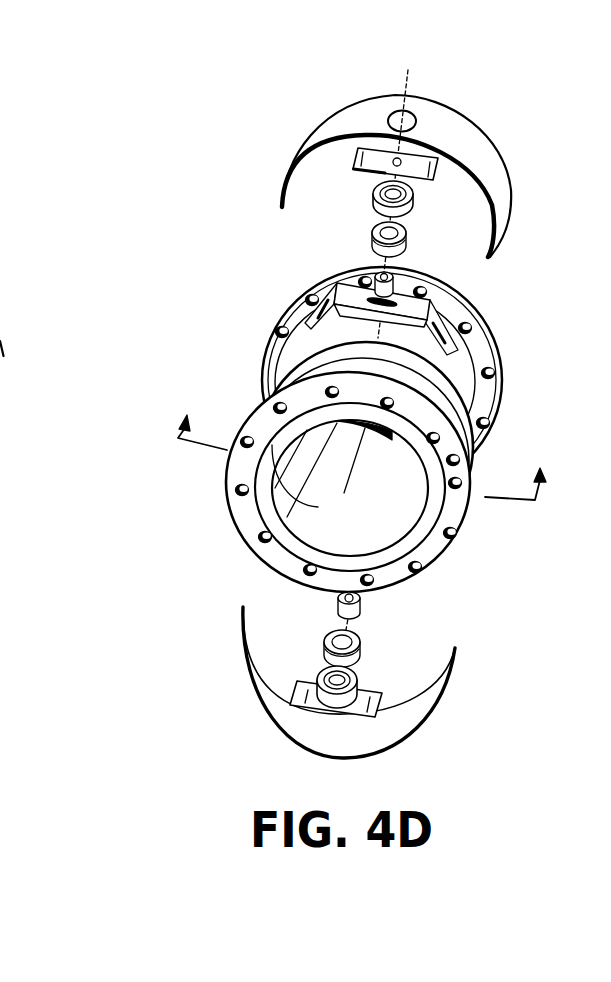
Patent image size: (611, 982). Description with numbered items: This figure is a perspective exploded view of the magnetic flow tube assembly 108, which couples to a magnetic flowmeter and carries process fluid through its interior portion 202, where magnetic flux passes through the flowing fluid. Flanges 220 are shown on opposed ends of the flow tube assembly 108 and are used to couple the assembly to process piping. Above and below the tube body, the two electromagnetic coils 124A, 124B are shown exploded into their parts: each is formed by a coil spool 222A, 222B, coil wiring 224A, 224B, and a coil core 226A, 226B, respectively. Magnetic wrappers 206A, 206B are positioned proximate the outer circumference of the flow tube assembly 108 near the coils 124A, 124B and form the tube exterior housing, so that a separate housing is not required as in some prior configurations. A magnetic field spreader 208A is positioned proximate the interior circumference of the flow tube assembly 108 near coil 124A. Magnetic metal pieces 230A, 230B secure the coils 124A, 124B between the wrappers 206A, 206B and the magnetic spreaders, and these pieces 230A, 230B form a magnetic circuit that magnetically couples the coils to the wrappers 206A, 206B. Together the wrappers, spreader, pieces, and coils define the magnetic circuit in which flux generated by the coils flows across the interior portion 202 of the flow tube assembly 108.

The magnetic flow tube assembly 108 is at (180, 266).
The electromagnetic coil 124A is at (324, 213).
The electromagnetic coil 124B is at (272, 662).
The interior portion 202 is at (316, 507).
The magnetic wrapper 206A is at (458, 155).
The magnetic wrapper 206B is at (387, 738).
The magnetic field spreader 208A is at (437, 318).
The flange 220 is at (502, 368).
The coil spool 222A is at (407, 233).
The coil spool 222B is at (360, 643).
The coil wiring 224A is at (414, 197).
The coil wiring 224B is at (357, 681).
The coil core 226A is at (393, 283).
The coil core 226B is at (360, 608).
The magnetic metal piece 230A is at (378, 152).
The magnetic metal piece 230B is at (318, 704).